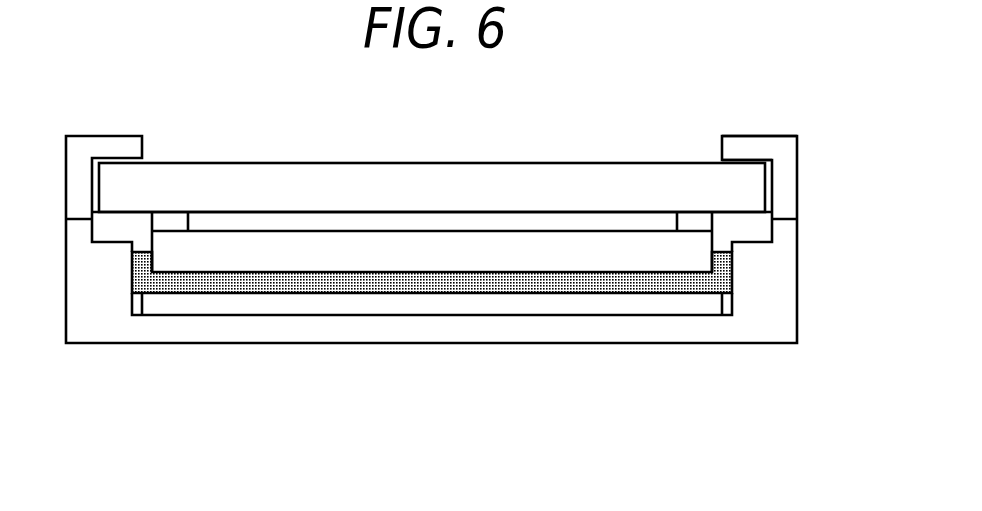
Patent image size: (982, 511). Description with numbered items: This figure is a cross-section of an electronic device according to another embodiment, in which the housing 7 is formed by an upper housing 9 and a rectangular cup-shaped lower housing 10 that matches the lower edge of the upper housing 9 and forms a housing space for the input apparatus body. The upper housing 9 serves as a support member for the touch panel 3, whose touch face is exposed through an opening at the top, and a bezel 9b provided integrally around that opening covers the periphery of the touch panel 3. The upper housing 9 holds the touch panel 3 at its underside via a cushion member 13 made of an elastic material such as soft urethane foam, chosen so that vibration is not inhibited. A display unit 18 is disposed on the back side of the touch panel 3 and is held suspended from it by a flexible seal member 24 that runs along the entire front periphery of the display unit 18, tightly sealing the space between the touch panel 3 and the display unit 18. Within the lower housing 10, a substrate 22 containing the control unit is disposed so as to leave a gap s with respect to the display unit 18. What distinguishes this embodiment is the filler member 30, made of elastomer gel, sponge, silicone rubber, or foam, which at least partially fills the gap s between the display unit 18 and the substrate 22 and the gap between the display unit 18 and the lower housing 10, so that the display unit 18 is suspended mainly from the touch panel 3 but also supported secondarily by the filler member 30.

The touch panel 3 is at (493, 172).
The housing 7 is at (459, 208).
The upper housing 9 is at (456, 163).
The bezel 9b is at (765, 135).
The lower housing 10 is at (775, 282).
The cushion member 13 is at (743, 161).
The display unit 18 is at (577, 245).
The substrate 22 is at (560, 300).
The seal member 24 is at (690, 218).
The filler member 30 is at (443, 287).
The gap s is at (295, 290).